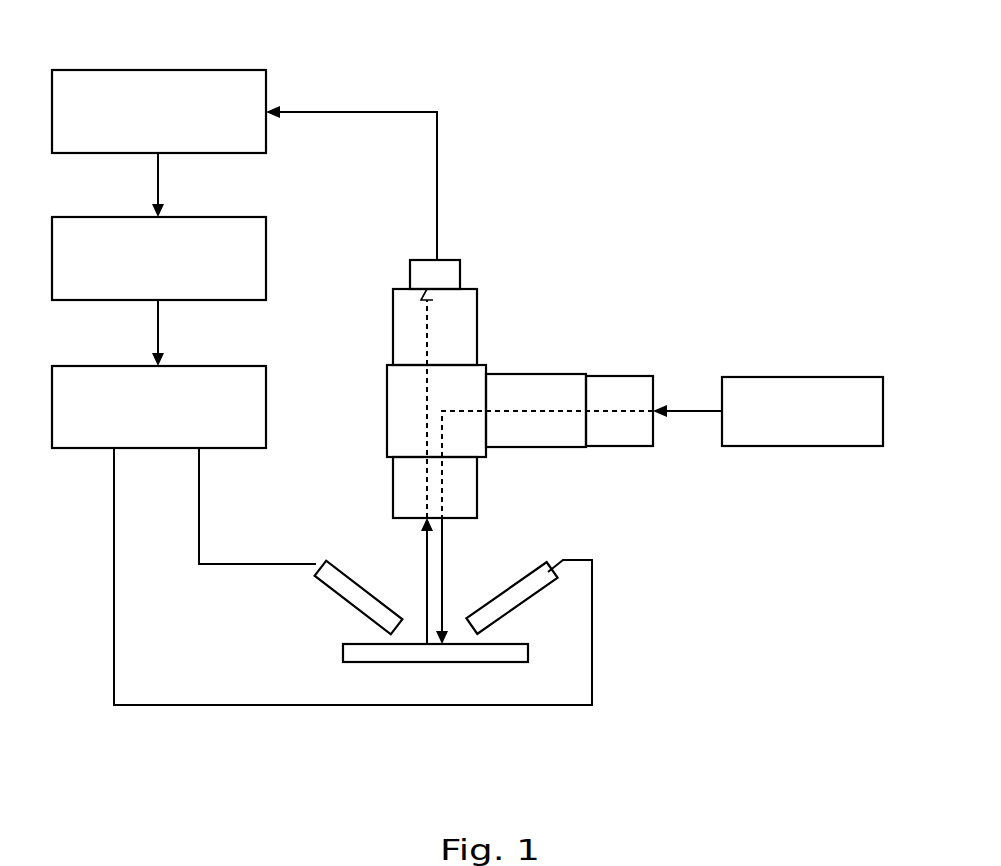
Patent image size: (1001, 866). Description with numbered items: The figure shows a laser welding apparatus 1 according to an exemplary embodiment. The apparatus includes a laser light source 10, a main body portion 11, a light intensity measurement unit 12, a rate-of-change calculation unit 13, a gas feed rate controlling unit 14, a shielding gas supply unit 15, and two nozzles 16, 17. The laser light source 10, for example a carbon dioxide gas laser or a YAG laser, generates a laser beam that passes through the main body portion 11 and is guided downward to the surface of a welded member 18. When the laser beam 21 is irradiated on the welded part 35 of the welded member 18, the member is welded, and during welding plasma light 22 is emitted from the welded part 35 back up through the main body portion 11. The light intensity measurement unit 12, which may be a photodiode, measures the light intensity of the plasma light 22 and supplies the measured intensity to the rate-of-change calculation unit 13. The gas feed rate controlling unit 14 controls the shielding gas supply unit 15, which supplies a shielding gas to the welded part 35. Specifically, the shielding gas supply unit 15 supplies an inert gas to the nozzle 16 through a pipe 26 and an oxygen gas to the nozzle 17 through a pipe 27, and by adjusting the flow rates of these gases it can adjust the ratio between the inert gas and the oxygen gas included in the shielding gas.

The laser welding apparatus 1 is at (568, 96).
The laser light source 10 is at (803, 377).
The main body portion 11 is at (519, 335).
The light intensity measurement unit 12 is at (452, 260).
The rate-of-change calculation unit 13 is at (226, 70).
The gas feed rate controlling unit 14 is at (226, 217).
The shielding gas supply unit 15 is at (226, 366).
The nozzle 16 is at (336, 563).
The nozzle 17 is at (548, 562).
The welded member 18 is at (343, 653).
The laser beam 21 is at (444, 522).
The plasma light 22 is at (425, 524).
The pipe 26 is at (240, 564).
The pipe 27 is at (114, 548).
The welded part 35 is at (421, 634).